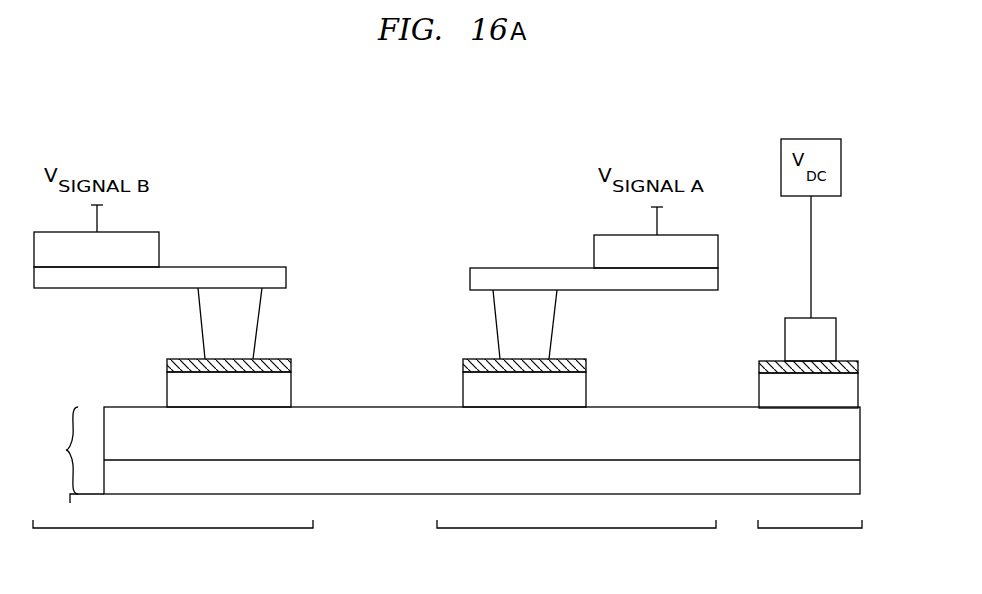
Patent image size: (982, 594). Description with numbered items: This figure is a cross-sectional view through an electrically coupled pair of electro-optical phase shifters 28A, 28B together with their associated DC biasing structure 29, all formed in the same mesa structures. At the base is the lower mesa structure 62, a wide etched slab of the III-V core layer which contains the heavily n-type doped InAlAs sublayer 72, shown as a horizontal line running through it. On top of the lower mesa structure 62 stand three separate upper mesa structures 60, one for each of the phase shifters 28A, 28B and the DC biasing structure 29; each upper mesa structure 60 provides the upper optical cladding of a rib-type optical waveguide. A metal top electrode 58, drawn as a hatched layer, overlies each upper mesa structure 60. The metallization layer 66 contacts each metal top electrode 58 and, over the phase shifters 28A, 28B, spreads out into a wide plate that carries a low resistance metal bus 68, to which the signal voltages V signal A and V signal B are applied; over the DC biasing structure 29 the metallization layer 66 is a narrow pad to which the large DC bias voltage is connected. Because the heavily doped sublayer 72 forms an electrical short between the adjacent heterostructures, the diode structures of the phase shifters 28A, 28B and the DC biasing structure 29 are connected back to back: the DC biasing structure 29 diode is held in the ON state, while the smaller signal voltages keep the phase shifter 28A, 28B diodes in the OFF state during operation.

The electro-optical phase shifter 28A is at (589, 530).
The electro-optical phase shifter 28B is at (154, 530).
The DC biasing structure 29 is at (811, 530).
The metal top electrode 58 is at (291, 360).
The mesa structure 60 is at (291, 388).
The lower mesa structure 62 is at (448, 455).
The metallization layer 66 is at (233, 268).
The metal bus 68 is at (159, 237).
The heavily n-type doped InAlAs sublayer 72 is at (229, 463).